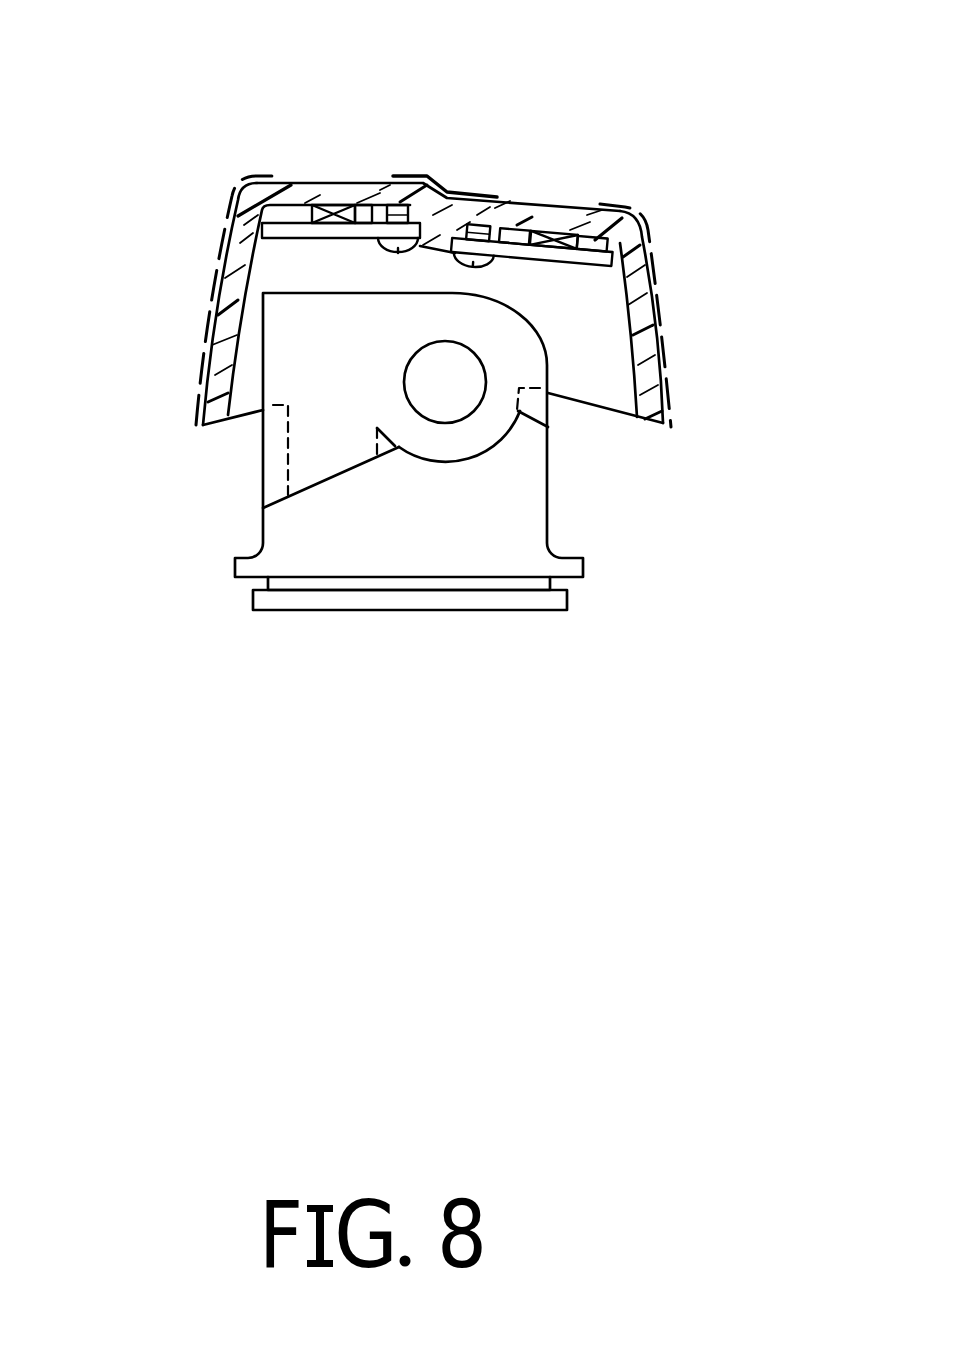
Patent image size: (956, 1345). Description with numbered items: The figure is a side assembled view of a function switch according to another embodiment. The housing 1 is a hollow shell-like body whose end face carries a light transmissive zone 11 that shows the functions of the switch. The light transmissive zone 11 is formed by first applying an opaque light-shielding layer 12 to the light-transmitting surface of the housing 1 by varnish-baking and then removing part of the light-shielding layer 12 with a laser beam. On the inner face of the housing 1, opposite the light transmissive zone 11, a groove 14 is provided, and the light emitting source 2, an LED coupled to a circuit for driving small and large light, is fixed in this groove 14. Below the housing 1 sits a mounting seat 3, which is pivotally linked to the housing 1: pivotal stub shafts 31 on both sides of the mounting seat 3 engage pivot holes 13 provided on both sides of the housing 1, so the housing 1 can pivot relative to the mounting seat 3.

The housing 1 is at (157, 303).
The light transmissive zone 11 is at (577, 208).
The light-shielding layer 12 is at (662, 303).
The groove 14 is at (292, 192).
The light emitting source 2 is at (340, 222).
The mounting seat 3 is at (200, 500).
The pivot hole 13 is at (483, 365).
The pivotal stub shaft 31 is at (458, 395).